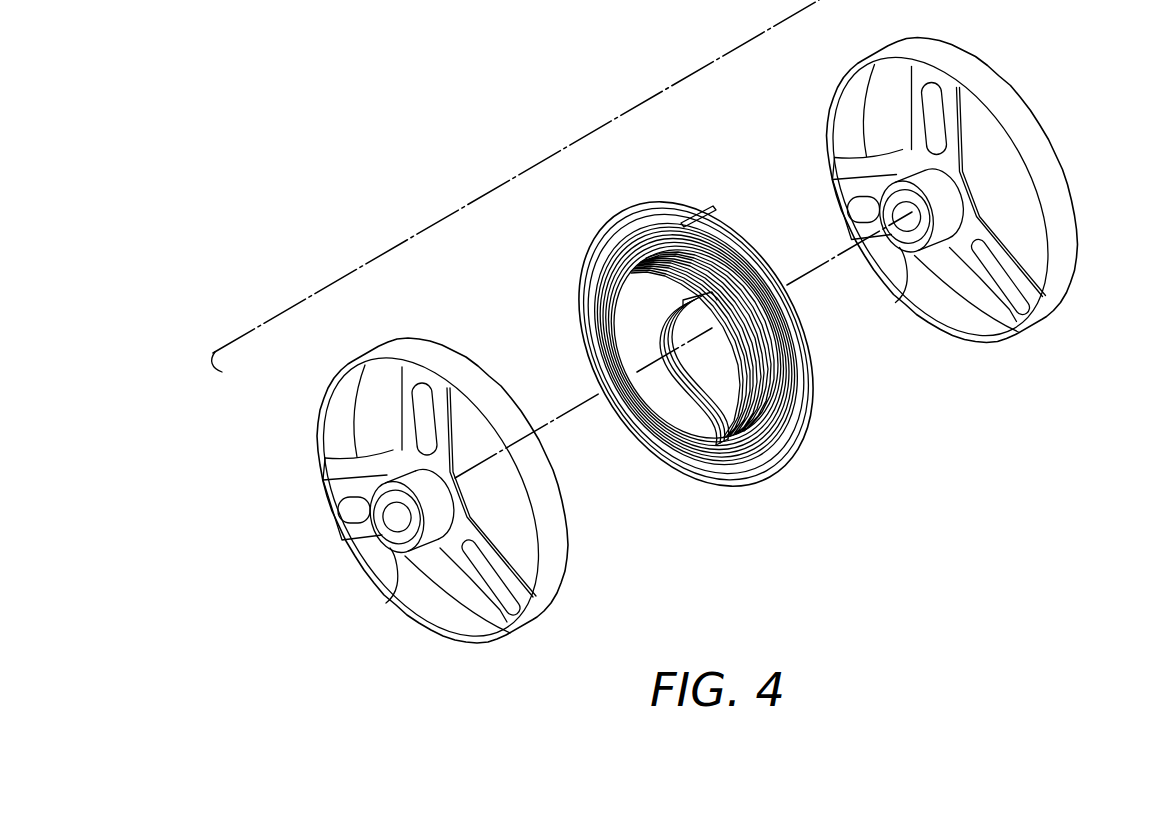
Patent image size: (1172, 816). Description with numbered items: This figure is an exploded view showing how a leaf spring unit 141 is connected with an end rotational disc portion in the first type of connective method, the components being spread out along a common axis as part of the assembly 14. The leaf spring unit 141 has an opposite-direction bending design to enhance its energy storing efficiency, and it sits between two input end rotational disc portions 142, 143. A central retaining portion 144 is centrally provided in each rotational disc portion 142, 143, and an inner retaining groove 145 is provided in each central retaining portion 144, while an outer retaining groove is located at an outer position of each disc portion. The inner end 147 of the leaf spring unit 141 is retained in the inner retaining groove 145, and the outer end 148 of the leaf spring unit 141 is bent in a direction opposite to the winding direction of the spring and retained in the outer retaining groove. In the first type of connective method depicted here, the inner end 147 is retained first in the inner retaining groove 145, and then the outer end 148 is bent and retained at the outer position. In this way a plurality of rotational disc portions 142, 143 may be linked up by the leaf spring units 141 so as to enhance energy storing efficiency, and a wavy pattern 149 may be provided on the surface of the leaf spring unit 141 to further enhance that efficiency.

The wheel assembly 14 is at (550, 157).
The leaf spring unit 141 is at (586, 326).
The input end rotational disc portion 142 is at (547, 508).
The input end rotational disc portion 143 is at (1054, 204).
The central retaining portion 144 is at (396, 596).
The inner retaining groove 145 is at (326, 457).
The inner end 147 is at (717, 297).
The outer end 148 is at (688, 204).
The wavy pattern 149 is at (812, 422).